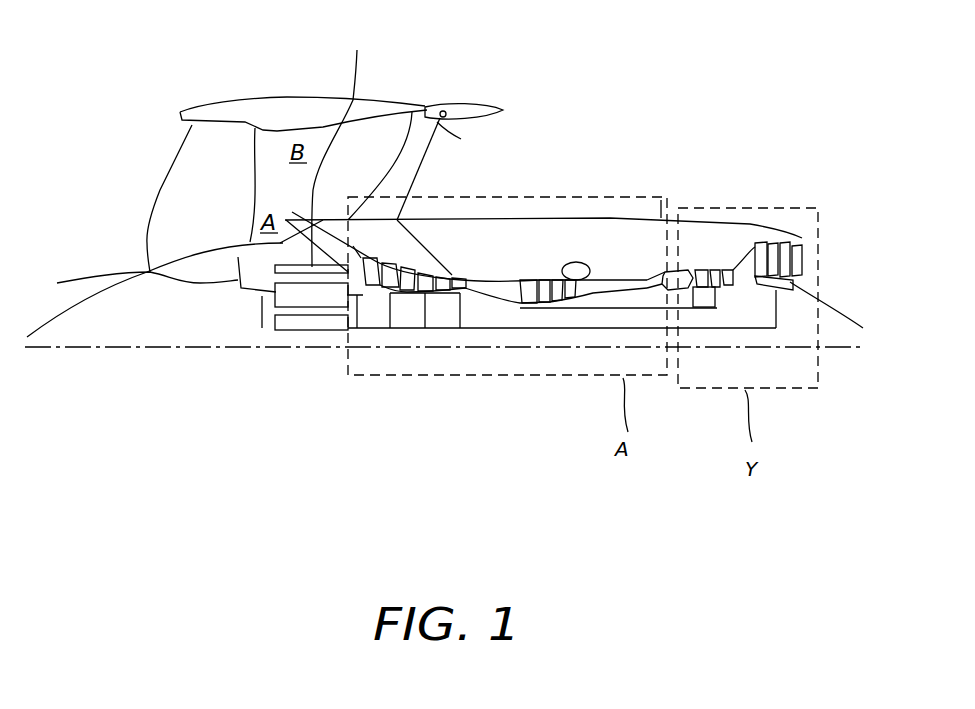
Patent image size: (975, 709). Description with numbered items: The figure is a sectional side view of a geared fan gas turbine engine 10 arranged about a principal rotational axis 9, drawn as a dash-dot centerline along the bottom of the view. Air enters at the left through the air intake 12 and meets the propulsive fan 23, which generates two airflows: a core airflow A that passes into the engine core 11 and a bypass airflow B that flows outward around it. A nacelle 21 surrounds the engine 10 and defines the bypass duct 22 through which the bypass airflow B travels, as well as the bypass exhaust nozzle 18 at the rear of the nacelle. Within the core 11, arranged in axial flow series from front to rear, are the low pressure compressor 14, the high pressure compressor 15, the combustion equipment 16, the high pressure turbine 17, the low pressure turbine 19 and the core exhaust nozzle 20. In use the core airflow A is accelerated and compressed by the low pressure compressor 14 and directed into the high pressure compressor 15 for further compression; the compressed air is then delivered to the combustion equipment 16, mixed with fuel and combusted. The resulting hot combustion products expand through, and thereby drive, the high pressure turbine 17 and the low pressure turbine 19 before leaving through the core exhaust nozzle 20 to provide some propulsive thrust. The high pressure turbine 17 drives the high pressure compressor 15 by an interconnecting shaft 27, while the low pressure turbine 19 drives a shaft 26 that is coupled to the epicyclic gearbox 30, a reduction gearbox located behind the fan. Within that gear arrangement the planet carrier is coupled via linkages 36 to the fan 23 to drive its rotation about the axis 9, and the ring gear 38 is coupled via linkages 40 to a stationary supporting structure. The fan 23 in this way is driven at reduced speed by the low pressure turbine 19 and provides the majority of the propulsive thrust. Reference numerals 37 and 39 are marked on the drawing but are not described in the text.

The principal rotational axis 9 is at (133, 350).
The gas turbine engine 10 is at (633, 117).
The engine core 11 is at (496, 256).
The air intake 12 is at (100, 222).
The low pressure compressor 14 is at (438, 248).
The high pressure compressor 15 is at (542, 256).
The combustion equipment 16 is at (683, 270).
The high pressure turbine 17 is at (728, 238).
The bypass exhaust nozzle 18 is at (441, 112).
The low pressure turbine 19 is at (787, 203).
The core exhaust nozzle 20 is at (822, 258).
The nacelle 21 is at (283, 97).
The bypass duct 22 is at (277, 173).
The propulsive fan 23 is at (177, 192).
The shaft 26 is at (474, 330).
The interconnecting shaft 27 is at (582, 308).
The epicyclic gearbox 30 is at (234, 329).
The linkages 36 is at (131, 286).
The core casing 37 is at (661, 200).
The ring gear 38 is at (575, 262).
The pylon fairing 39 is at (503, 110).
The linkages 40 is at (338, 147).